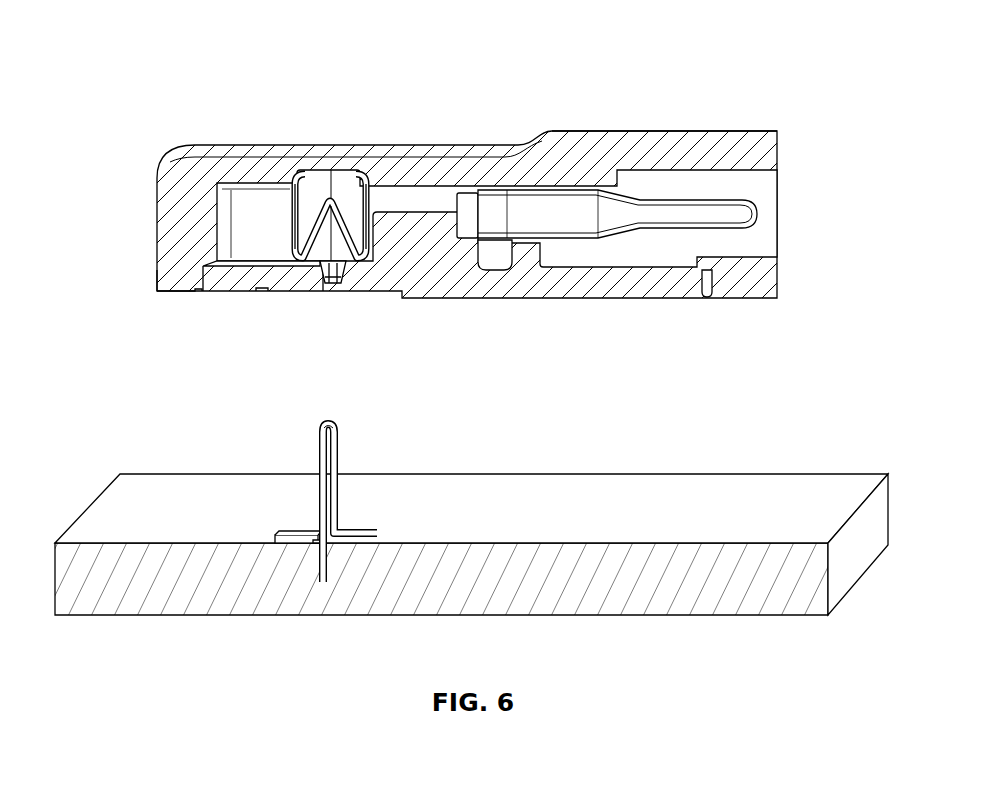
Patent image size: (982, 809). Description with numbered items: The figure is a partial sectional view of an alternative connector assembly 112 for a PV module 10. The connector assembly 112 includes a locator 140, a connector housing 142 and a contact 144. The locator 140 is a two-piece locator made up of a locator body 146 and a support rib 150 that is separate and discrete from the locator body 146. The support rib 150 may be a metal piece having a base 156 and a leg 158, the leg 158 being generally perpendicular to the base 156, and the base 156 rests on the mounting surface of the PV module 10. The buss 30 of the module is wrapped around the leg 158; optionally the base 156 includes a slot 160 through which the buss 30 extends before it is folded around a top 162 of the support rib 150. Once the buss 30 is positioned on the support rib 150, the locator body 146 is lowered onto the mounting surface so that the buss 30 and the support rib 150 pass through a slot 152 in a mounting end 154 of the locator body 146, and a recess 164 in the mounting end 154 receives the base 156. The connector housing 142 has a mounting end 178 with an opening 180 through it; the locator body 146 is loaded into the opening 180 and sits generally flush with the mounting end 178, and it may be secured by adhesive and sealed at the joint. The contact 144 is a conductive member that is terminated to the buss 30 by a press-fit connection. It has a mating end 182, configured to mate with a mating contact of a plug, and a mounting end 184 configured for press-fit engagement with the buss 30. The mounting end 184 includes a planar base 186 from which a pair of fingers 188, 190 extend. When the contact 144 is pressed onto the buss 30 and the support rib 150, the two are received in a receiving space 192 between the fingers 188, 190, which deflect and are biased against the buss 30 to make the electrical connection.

The PV module 10 is at (166, 640).
The buss 30 is at (340, 466).
The connector assembly 112 is at (228, 92).
The locator 140 is at (302, 410).
The connector housing 142 is at (136, 190).
The contact 144 is at (578, 188).
The locator body 146 is at (490, 285).
The support rib 150 is at (338, 500).
The slot 152 is at (328, 293).
The mounting end 154 is at (228, 294).
The base 156 is at (290, 530).
The leg 158 is at (322, 452).
The slot 160 is at (311, 547).
The top 162 is at (336, 431).
The recess 164 is at (270, 294).
The mounting end 178 is at (170, 294).
The opening 180 is at (196, 283).
The mating end 182 is at (748, 202).
The mounting end 184 is at (291, 218).
The planar base 186 is at (392, 184).
The finger 188 is at (296, 185).
The finger 190 is at (366, 188).
The receiving space 192 is at (339, 285).